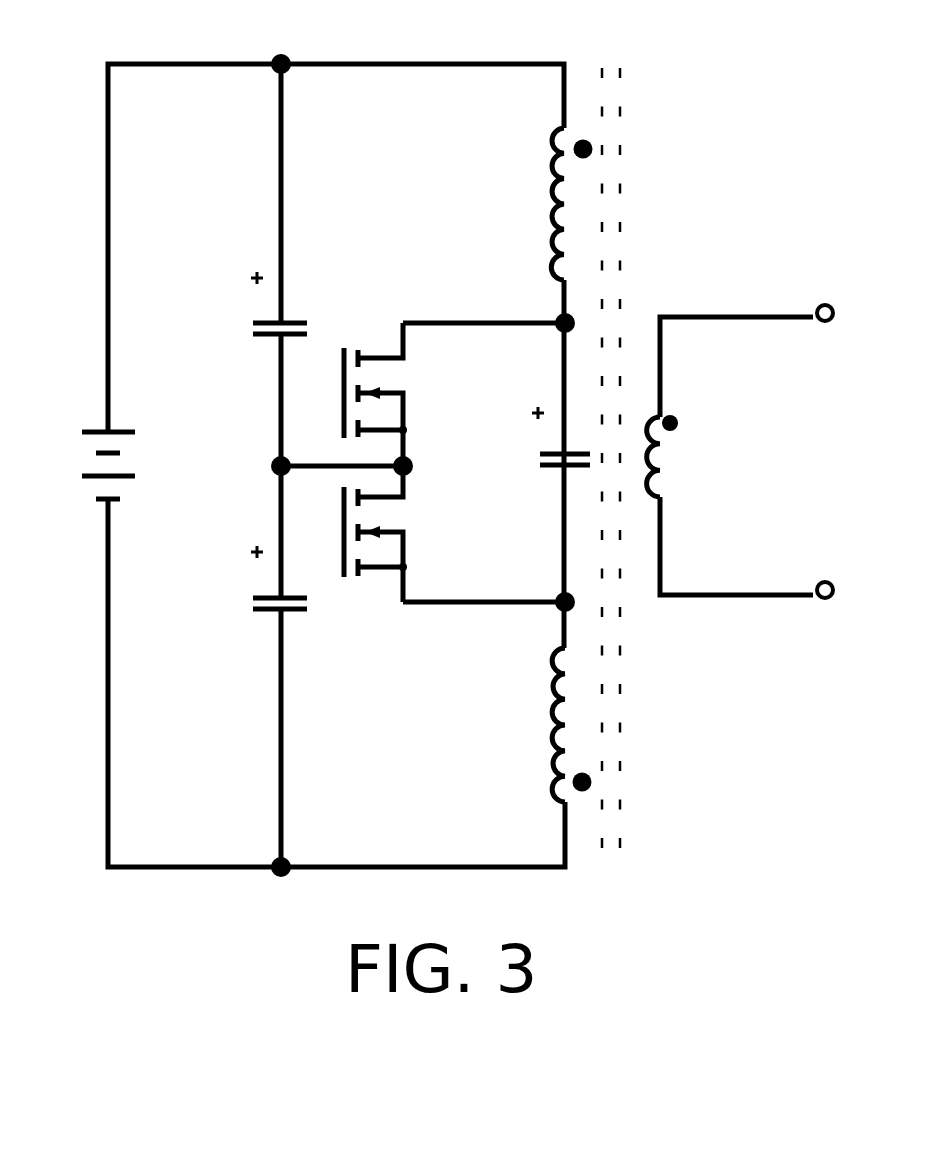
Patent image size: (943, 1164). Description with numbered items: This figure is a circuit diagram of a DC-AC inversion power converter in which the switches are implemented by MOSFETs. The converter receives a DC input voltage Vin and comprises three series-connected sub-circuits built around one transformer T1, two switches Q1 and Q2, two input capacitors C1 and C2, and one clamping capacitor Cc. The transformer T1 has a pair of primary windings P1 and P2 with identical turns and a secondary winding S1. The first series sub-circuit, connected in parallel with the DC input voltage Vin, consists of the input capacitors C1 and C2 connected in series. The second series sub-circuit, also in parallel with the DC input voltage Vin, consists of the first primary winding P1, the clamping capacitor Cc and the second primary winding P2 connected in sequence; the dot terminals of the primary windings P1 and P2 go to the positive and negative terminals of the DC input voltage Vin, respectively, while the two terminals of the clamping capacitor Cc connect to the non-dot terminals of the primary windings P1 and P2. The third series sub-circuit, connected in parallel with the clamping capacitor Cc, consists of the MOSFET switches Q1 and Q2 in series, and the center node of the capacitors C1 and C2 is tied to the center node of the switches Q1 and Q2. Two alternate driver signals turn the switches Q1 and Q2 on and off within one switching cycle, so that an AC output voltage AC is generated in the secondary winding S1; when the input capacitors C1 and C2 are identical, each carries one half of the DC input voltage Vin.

The DC input voltage Vin is at (77, 430).
The input capacitor C1 is at (241, 314).
The input capacitor C2 is at (241, 590).
The switch Q1 is at (412, 393).
The switch Q2 is at (412, 532).
The clamping capacitor Cc is at (536, 447).
The first primary winding P1 is at (540, 204).
The second primary winding P2 is at (541, 725).
The transformer T1 is at (609, 426).
The secondary winding S1 is at (730, 456).
The AC output voltage AC is at (825, 451).